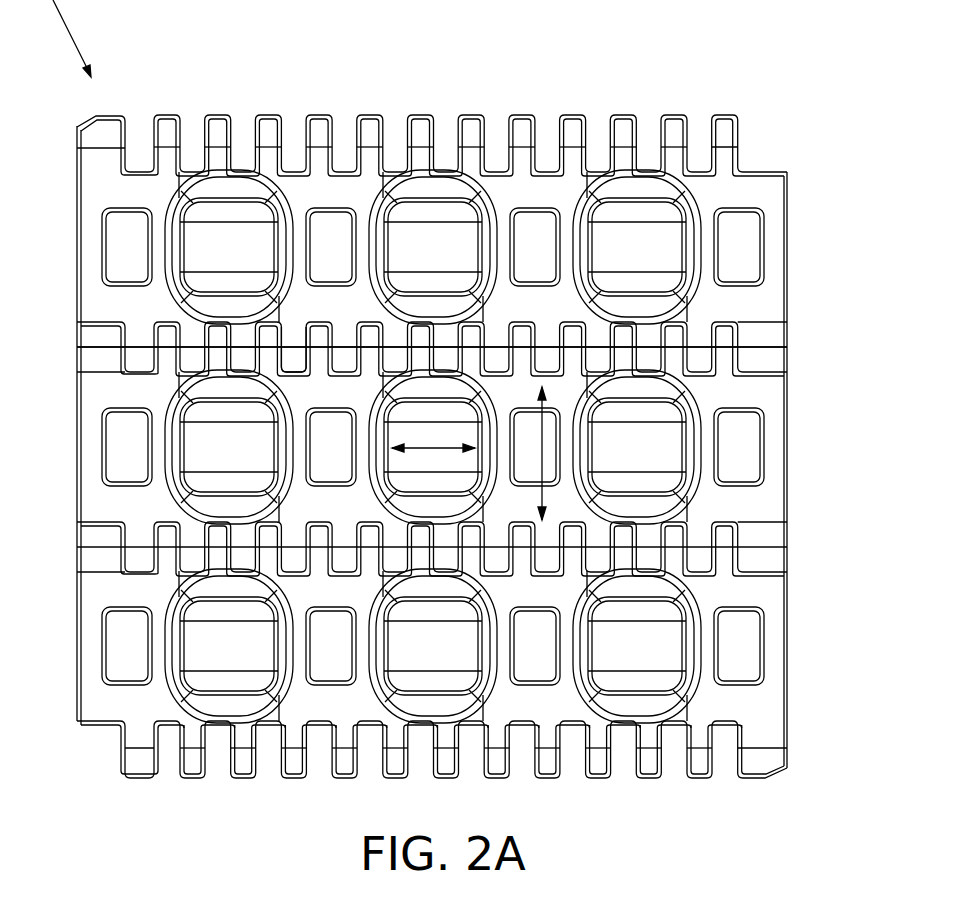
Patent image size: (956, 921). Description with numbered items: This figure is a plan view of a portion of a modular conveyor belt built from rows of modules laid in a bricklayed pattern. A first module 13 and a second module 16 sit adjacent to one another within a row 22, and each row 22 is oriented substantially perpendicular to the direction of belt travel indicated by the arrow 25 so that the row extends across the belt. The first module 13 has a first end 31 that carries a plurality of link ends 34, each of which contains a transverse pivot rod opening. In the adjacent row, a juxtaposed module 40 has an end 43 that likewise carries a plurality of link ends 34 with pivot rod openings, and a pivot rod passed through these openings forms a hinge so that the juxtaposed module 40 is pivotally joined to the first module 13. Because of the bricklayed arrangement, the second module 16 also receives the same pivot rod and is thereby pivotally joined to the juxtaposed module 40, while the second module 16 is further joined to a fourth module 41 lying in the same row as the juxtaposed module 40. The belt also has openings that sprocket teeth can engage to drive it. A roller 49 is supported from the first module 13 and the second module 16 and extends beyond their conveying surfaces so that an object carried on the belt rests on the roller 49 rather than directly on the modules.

The first module 13 is at (338, 406).
The second module 16 is at (525, 404).
The row 22 is at (818, 122).
The arrow 25 is at (545, 436).
The first end 31 is at (265, 348).
The link ends 34 is at (345, 358).
The juxtaposed module 40 is at (332, 202).
The fourth module 41 is at (525, 204).
The end 43 is at (290, 346).
The roller 49 is at (428, 466).